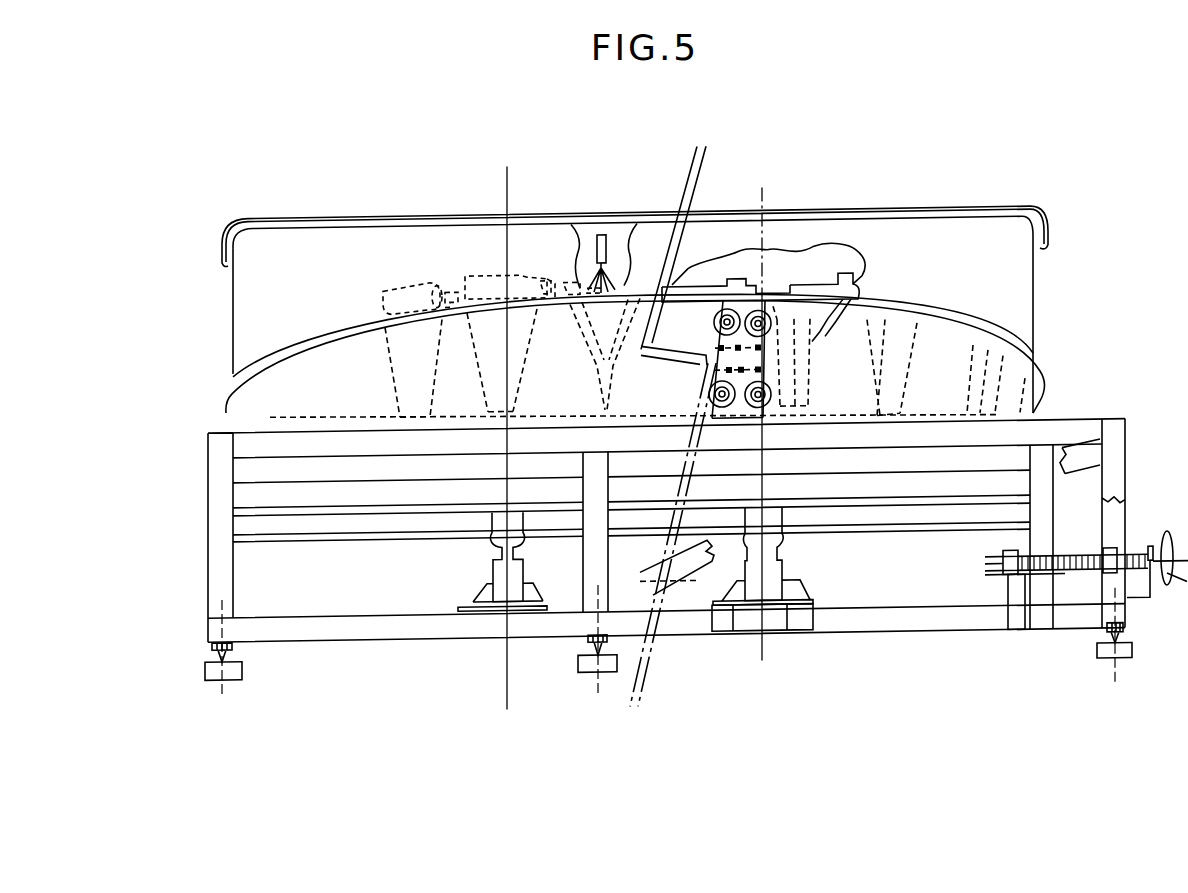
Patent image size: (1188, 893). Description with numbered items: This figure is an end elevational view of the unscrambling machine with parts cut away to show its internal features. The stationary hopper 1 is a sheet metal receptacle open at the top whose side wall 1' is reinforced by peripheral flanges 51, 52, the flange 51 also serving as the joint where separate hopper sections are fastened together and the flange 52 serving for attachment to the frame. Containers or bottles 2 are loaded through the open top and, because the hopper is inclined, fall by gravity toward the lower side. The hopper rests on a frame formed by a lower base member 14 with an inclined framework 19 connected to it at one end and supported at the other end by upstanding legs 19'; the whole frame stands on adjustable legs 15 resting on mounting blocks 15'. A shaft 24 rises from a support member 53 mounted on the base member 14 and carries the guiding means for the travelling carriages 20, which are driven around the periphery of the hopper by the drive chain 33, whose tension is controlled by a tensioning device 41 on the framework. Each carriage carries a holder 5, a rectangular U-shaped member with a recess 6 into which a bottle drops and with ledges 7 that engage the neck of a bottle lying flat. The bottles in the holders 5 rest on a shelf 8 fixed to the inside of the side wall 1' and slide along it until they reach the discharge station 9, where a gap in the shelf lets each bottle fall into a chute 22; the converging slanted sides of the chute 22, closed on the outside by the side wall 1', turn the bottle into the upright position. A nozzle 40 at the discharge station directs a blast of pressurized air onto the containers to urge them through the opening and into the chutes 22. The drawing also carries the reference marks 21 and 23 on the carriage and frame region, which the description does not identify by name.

The hopper 1 is at (635, 201).
The side wall 1' is at (659, 330).
The containers or bottles 2 is at (485, 282).
The holder 5 is at (765, 287).
The recess 6 is at (804, 293).
The ledges 7 is at (566, 286).
The shelf 8 is at (735, 287).
The discharge station 9 is at (585, 212).
The lower base member 14 is at (470, 624).
The adjustable legs 15 is at (700, 651).
The mounting blocks 15' is at (686, 659).
The inclined framework 19 is at (673, 426).
The upstanding legs 19' is at (667, 531).
The travelling carriages 20 is at (708, 368).
The roller 21 is at (718, 331).
The chutes 22 is at (500, 349).
The center post 23 is at (637, 416).
The shaft 24 is at (502, 543).
The drive chain 33 is at (746, 419).
The nozzle 40 is at (602, 233).
The tensioning device 41 is at (1080, 563).
The peripheral flange 51 is at (1043, 380).
The peripheral flange 52 is at (1033, 217).
The support member 53 is at (487, 593).